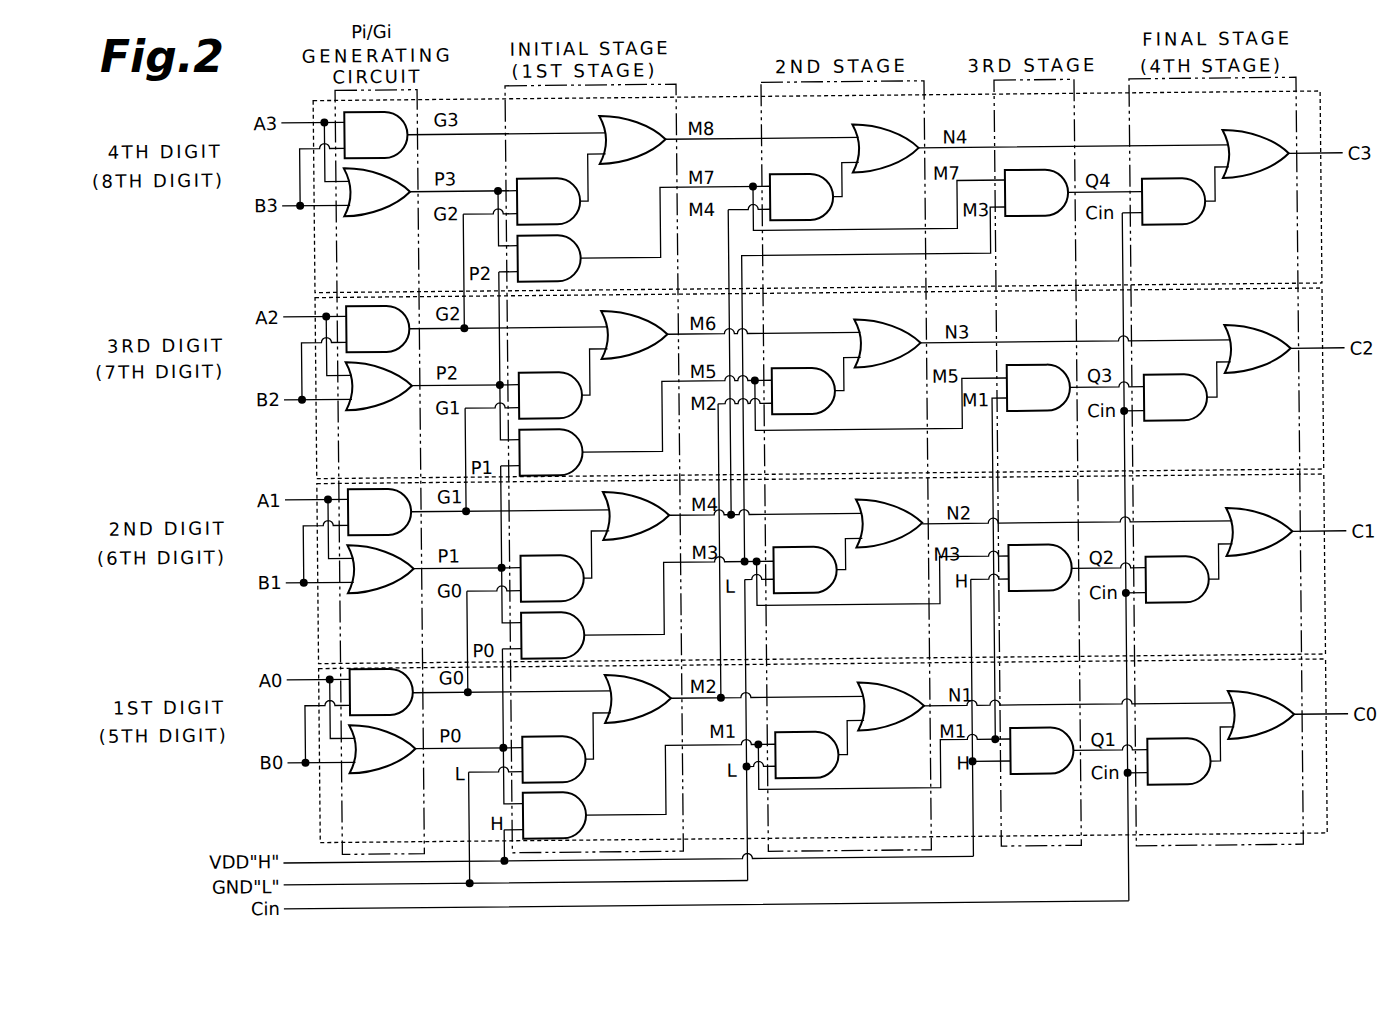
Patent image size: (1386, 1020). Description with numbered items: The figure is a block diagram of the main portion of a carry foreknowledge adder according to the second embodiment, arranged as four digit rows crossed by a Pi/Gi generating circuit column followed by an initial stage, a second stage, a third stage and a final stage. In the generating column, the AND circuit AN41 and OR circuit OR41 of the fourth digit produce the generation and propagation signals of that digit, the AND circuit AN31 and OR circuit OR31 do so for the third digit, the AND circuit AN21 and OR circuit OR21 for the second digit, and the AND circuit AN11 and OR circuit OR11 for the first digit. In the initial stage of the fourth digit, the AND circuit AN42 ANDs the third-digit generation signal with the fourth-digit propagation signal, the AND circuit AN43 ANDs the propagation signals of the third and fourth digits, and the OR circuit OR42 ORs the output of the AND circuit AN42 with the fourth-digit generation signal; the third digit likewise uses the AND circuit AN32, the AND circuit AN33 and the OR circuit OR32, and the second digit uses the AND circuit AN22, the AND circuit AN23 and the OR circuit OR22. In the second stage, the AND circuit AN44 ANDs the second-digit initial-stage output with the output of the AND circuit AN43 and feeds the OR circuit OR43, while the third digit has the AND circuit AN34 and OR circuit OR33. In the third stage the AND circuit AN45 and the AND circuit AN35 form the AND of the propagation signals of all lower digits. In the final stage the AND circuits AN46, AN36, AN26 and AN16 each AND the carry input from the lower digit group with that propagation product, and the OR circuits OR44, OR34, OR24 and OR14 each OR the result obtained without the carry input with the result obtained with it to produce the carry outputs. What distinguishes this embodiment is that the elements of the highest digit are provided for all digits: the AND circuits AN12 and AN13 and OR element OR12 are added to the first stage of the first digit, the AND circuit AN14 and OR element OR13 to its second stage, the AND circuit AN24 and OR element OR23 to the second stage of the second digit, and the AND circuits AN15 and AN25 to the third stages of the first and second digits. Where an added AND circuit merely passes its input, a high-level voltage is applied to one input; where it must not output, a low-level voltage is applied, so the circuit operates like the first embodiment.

The AND circuit AN41 is at (375, 135).
The OR circuit OR41 is at (377, 192).
The AND circuit AN42 is at (548, 201).
The AND circuit AN43 is at (548, 258).
The OR circuit OR42 is at (632, 139).
The AND circuit AN44 is at (801, 197).
The OR circuit OR43 is at (885, 148).
The AND circuit AN45 is at (1036, 192).
The AND circuit AN46 is at (1173, 201).
The OR circuit OR44 is at (1255, 153).
The AND circuit AN31 is at (377, 329).
The OR circuit OR31 is at (379, 386).
The AND circuit AN32 is at (550, 395).
The AND circuit AN33 is at (550, 452).
The OR circuit OR32 is at (634, 334).
The AND circuit AN34 is at (803, 391).
The OR circuit OR33 is at (887, 343).
The AND circuit AN35 is at (1038, 387).
The AND circuit AN36 is at (1175, 397).
The OR circuit OR34 is at (1257, 348).
The AND circuit AN21 is at (379, 512).
The OR circuit OR21 is at (380, 569).
The AND circuit AN22 is at (552, 578).
The AND circuit AN23 is at (552, 635).
The OR circuit OR22 is at (636, 515).
The AND circuit AN24 is at (804, 570).
The OR element OR23 is at (889, 523).
The AND circuit AN25 is at (1039, 567).
The AND circuit AN26 is at (1177, 579).
The OR circuit OR24 is at (1259, 531).
The AND circuit AN11 is at (381, 692).
The OR circuit OR11 is at (382, 749).
The AND circuit AN12 is at (553, 759).
The AND circuit AN13 is at (554, 815).
The OR element OR12 is at (638, 698).
The AND circuit AN14 is at (806, 755).
The OR element OR13 is at (891, 706).
The AND circuit AN15 is at (1041, 750).
The AND circuit AN16 is at (1178, 761).
The OR circuit OR14 is at (1261, 714).